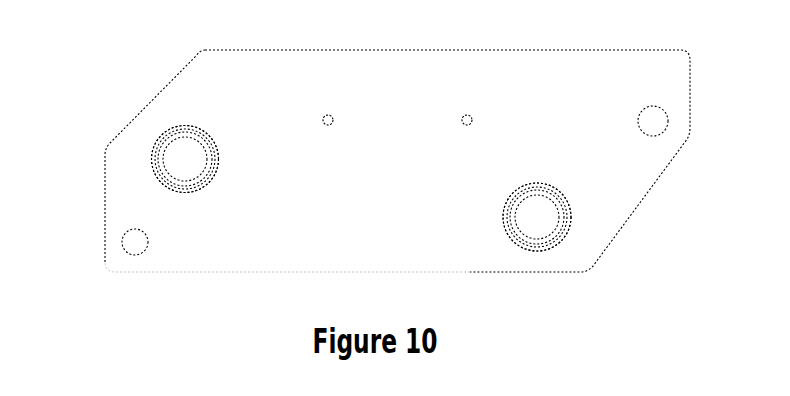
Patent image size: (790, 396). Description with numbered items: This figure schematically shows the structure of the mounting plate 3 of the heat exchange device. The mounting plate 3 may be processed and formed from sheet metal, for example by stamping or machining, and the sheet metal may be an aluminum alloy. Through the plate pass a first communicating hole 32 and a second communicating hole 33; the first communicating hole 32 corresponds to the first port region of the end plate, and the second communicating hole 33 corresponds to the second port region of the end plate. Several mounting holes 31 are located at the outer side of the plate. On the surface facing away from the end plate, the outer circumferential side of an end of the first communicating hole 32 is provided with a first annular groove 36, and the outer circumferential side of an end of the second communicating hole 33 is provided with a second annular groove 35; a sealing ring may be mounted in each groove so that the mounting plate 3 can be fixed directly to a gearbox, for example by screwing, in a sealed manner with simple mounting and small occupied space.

The mounting plate 3 is at (397, 136).
The mounting holes 31 is at (159, 270).
The first communicating hole 32 is at (499, 220).
The second communicating hole 33 is at (209, 150).
The second annular groove 35 is at (138, 159).
The first annular groove 36 is at (537, 187).